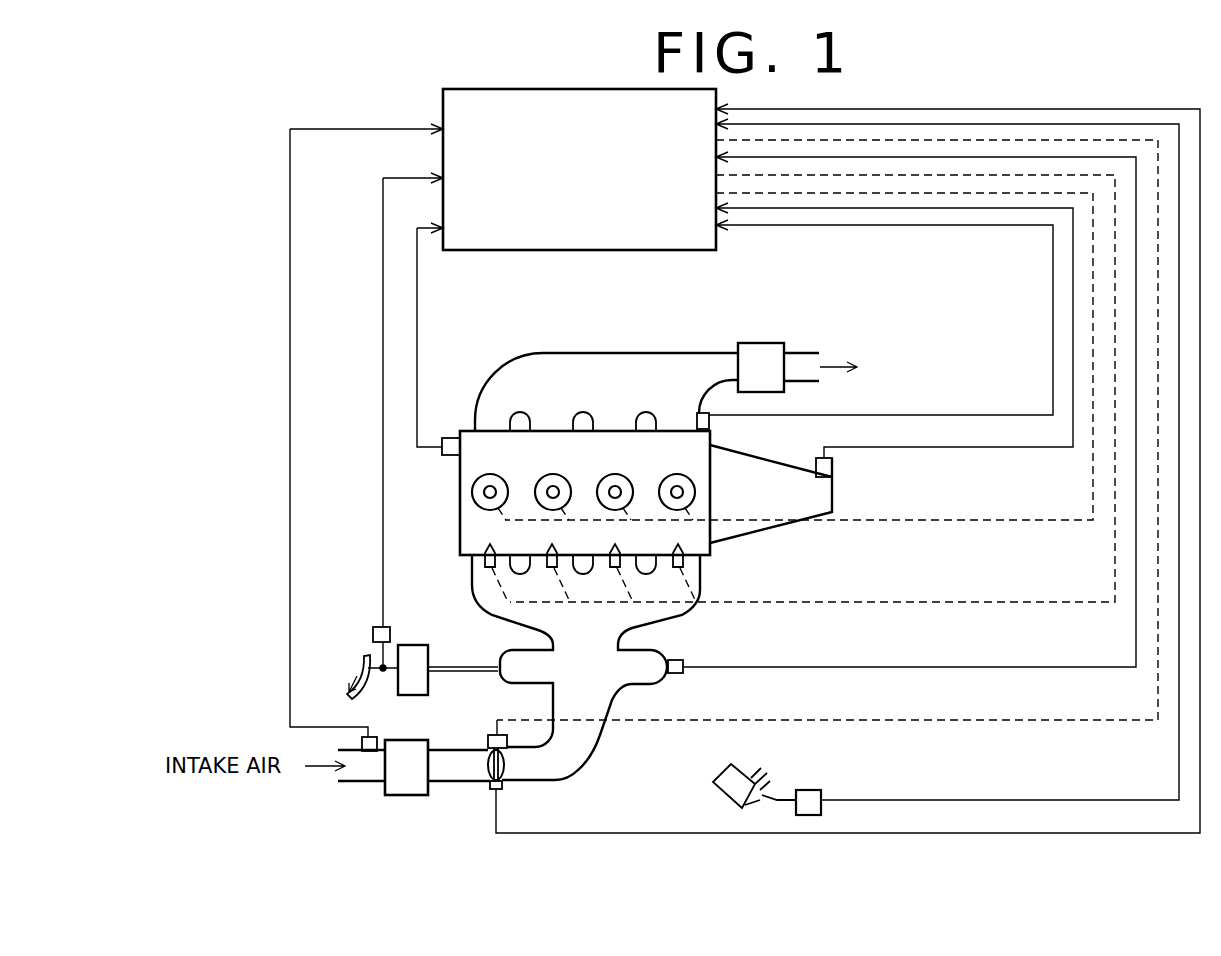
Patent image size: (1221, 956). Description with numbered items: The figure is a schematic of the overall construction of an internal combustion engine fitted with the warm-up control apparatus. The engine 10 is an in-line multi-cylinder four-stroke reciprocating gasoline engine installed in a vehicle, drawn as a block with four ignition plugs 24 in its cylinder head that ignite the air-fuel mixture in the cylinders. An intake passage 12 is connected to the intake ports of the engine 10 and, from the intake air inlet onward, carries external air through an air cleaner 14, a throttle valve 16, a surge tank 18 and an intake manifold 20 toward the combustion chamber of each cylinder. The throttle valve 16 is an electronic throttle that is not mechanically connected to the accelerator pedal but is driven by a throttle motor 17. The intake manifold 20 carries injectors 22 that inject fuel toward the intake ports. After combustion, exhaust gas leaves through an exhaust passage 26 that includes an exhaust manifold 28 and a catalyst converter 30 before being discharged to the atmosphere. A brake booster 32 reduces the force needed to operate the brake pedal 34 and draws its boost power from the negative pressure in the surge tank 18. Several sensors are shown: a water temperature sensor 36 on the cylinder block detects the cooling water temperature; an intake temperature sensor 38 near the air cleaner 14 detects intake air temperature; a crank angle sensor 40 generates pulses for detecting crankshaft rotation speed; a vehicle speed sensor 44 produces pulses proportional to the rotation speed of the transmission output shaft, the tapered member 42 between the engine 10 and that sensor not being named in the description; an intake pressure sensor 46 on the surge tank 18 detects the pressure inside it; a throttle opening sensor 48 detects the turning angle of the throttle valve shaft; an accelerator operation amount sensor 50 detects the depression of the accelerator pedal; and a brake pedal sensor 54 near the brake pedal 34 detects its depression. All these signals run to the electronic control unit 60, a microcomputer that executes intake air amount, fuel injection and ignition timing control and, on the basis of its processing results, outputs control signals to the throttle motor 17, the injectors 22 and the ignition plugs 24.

The engine 10 is at (460, 520).
The intake passage 12 is at (603, 761).
The air cleaner 14 is at (405, 790).
The throttle valve 16 is at (505, 766).
The throttle motor 17 is at (490, 736).
The surge tank 18 is at (660, 678).
The intake manifold 20 is at (640, 614).
The injectors 22 is at (490, 566).
The ignition plugs 24 is at (677, 486).
The exhaust passage 26 is at (673, 343).
The exhaust manifold 28 is at (512, 384).
The catalyst converter 30 is at (781, 344).
The brake booster 32 is at (413, 655).
The brake pedal 34 is at (362, 662).
The water temperature sensor 36 is at (452, 457).
The intake temperature sensor 38 is at (378, 740).
The crank angle sensor 40 is at (711, 425).
The crankshaft 42 is at (750, 528).
The vehicle speed sensor 44 is at (834, 470).
The intake pressure sensor 46 is at (683, 662).
The throttle opening sensor 48 is at (491, 787).
The accelerator operation amount sensor 50 is at (810, 792).
The brake pedal sensor 54 is at (380, 625).
The electronic control unit (ECU) 60 is at (588, 251).